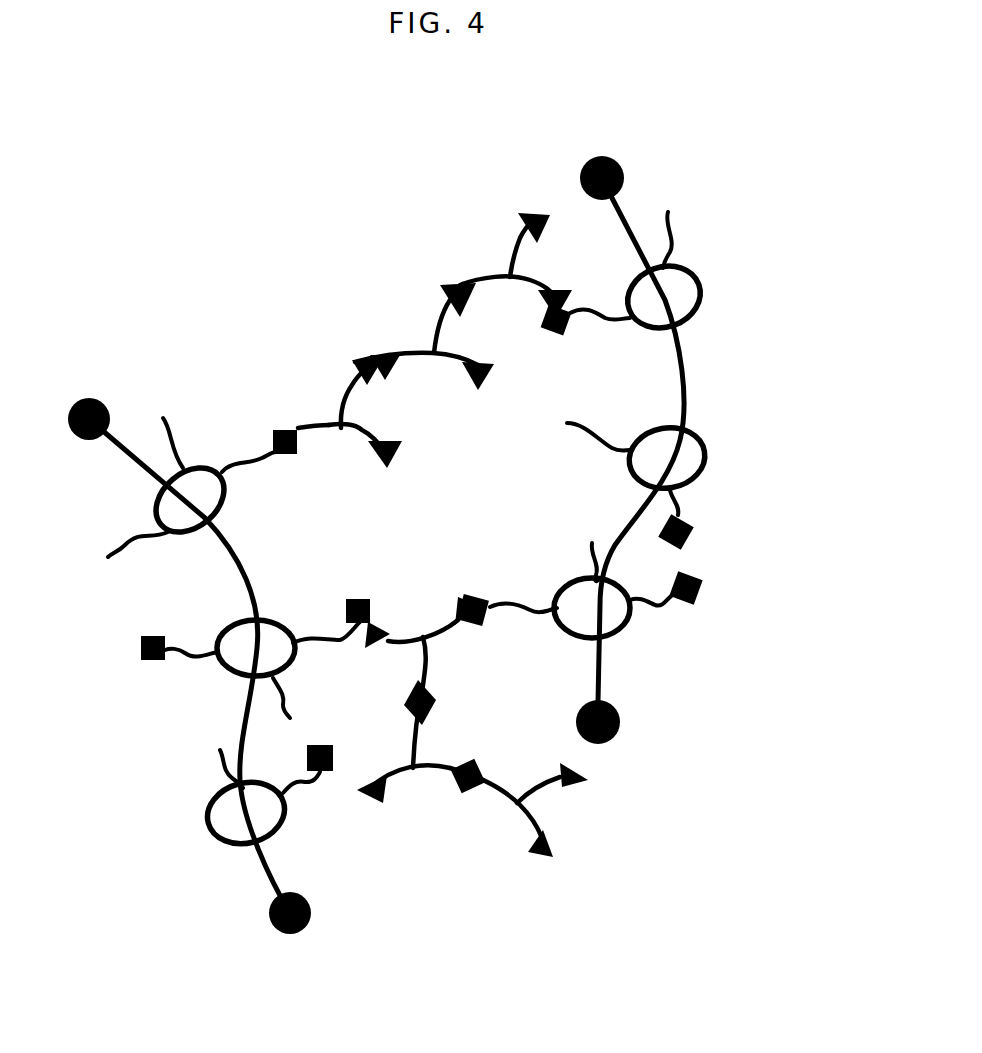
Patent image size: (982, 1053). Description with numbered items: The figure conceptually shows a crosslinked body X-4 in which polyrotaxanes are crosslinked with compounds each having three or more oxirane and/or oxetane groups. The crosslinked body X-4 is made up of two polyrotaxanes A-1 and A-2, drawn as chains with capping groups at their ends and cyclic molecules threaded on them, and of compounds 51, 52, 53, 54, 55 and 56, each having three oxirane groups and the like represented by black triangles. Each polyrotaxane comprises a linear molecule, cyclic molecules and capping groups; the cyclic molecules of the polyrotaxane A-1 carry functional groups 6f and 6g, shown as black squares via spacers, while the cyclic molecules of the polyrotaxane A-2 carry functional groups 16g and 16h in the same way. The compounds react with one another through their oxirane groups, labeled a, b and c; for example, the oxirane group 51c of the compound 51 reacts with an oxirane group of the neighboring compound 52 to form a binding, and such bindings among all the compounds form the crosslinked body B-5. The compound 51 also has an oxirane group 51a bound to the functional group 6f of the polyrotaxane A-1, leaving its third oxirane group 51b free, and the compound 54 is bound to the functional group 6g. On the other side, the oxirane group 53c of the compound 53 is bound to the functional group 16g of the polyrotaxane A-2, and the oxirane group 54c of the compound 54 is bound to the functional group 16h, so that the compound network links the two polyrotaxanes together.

The crosslinked body X-4 is at (721, 254).
The polyrotaxane A-1 is at (55, 368).
The polyrotaxane A-2 is at (703, 153).
The crosslinked body formed of compounds B-5 is at (518, 162).
The functional group 6f is at (276, 440).
The functional group 6g is at (345, 597).
The functional group 16g is at (567, 327).
The functional group 16h is at (477, 594).
The compound having three oxirane groups and the like 51 is at (273, 418).
The oxirane group and the like 51a is at (303, 433).
The oxirane group and the like 51b is at (392, 453).
The oxirane group and the like 51c is at (367, 393).
The compound having three oxirane groups and the like 52 is at (367, 352).
The compound having three oxirane groups and the like 53 is at (447, 273).
The oxirane group and the like 53c is at (560, 290).
The compound having three oxirane groups and the like 54 is at (465, 602).
The oxirane group and the like 54c is at (463, 625).
The compound having three oxirane groups and the like 55 is at (453, 797).
The compound having three oxirane groups and the like 56 is at (460, 800).